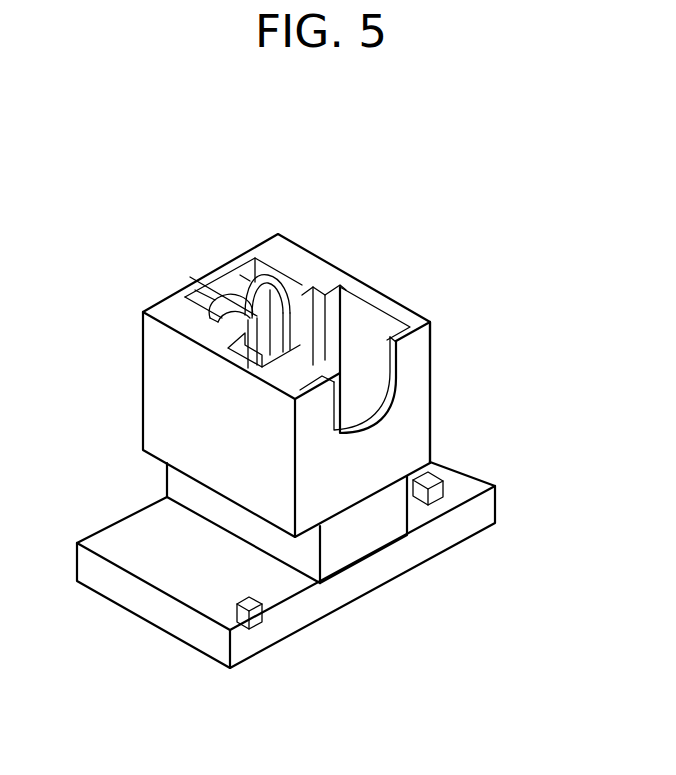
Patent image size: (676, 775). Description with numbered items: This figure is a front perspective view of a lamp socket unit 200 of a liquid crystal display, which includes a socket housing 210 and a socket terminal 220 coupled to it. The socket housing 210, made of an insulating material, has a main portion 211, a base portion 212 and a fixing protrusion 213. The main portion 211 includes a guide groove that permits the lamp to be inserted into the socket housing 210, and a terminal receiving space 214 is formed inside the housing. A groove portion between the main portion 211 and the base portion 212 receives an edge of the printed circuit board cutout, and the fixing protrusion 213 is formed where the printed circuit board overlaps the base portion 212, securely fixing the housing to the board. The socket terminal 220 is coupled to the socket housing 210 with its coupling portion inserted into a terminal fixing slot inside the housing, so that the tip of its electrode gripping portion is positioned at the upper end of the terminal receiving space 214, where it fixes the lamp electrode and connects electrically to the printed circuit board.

The lamp socket unit 200 is at (325, 133).
The socket housing 210 is at (313, 270).
The main portion 211 is at (433, 376).
The base portion 212 is at (465, 527).
The fixing protrusion 213 is at (430, 473).
The terminal receiving space 214 is at (240, 275).
The socket terminal 220 is at (261, 262).